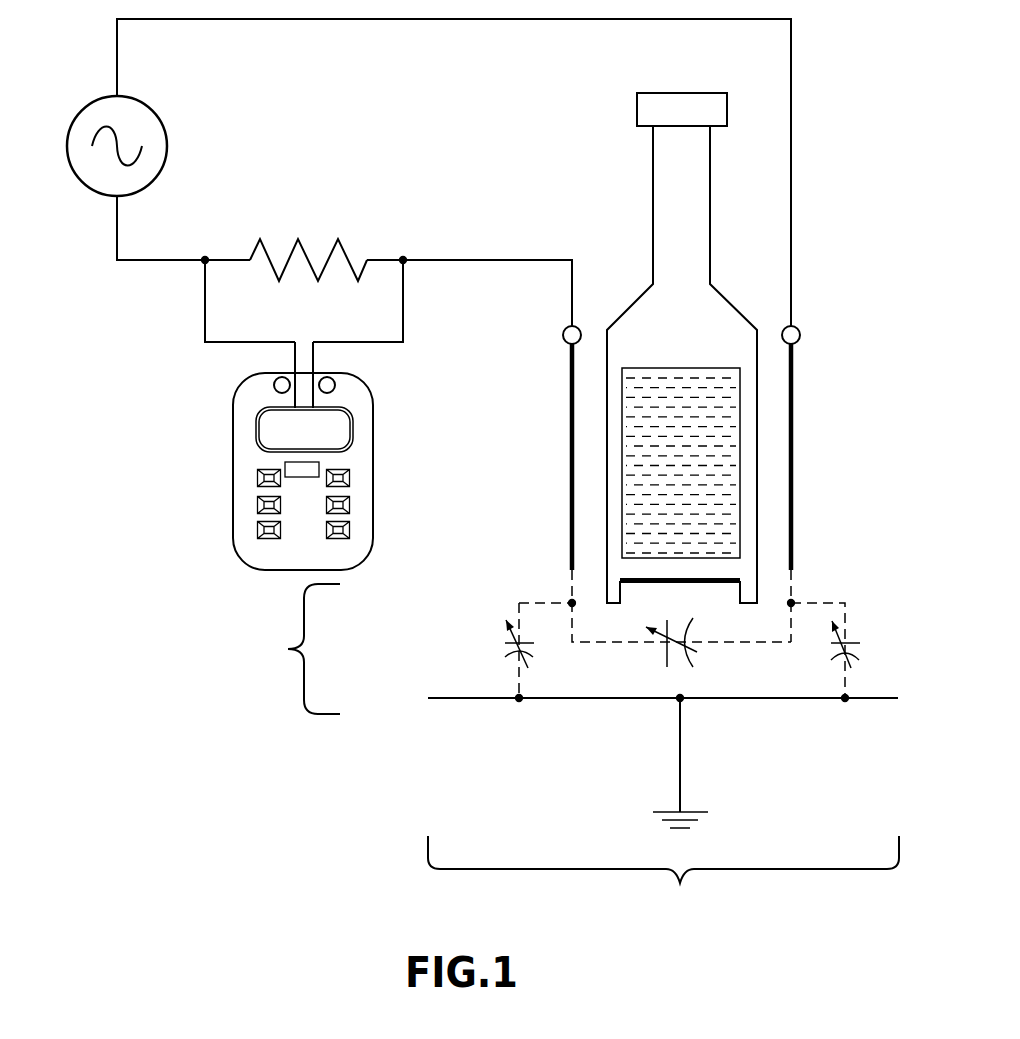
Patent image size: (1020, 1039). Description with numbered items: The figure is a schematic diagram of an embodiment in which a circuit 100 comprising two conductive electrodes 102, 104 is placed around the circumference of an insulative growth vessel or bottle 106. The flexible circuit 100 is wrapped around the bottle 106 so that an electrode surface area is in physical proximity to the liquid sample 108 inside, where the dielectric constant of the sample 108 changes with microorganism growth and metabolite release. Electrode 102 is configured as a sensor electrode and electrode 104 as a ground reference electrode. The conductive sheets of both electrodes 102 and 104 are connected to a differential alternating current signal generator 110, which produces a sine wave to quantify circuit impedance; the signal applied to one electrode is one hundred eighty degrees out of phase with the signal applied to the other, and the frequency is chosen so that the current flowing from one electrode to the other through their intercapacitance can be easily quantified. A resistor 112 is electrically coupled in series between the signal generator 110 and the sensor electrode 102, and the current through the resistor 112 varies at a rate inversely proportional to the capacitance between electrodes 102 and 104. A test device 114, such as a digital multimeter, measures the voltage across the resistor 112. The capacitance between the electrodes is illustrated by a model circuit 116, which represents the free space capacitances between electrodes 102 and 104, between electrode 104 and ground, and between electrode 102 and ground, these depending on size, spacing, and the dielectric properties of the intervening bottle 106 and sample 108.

The circuit 100 is at (663, 743).
The sensor electrode 102 is at (568, 486).
The ground reference electrode 104 is at (797, 484).
The growth vessel or bottle 106 is at (712, 229).
The liquid sample 108 is at (703, 437).
The differential alternating current signal generator 110 is at (78, 112).
The resistor 112 is at (322, 216).
The test device 114 is at (232, 473).
The model circuit 116 is at (286, 649).